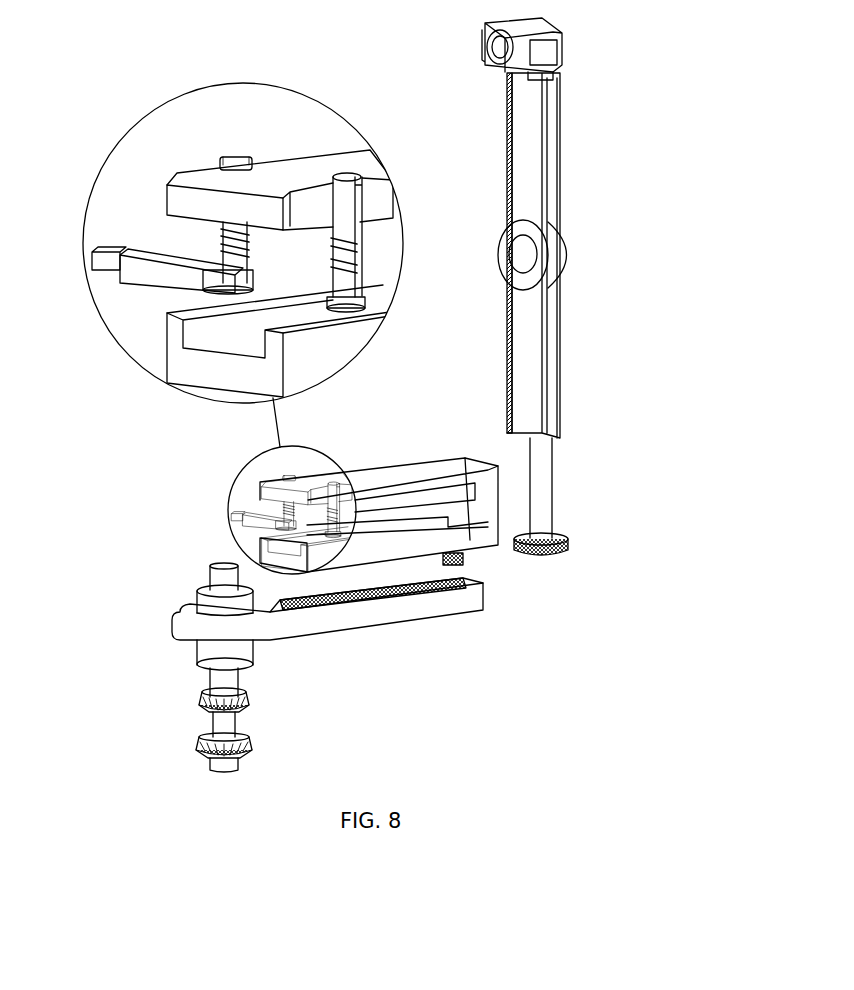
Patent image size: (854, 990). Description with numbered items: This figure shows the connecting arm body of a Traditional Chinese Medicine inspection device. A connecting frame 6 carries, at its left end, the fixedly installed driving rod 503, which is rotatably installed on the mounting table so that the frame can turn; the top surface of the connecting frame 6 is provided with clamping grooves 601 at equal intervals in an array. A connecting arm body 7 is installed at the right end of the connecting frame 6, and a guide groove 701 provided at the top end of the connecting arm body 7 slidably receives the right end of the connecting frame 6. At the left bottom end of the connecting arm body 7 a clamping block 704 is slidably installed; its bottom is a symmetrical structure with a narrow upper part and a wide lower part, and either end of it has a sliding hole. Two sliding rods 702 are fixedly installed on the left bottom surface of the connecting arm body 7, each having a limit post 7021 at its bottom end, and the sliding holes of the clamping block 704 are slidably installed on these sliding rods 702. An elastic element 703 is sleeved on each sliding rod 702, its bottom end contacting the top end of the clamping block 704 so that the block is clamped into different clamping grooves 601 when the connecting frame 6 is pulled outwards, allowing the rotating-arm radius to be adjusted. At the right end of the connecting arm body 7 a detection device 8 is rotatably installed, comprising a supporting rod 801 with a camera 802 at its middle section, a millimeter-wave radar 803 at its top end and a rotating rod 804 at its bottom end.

The detection device 8 is at (596, 286).
The supporting rod 801 is at (558, 163).
The camera 802 is at (577, 257).
The millimeter-wave radar 803 is at (528, 52).
The rotating rod 804 is at (590, 435).
The connecting arm body 7 is at (409, 470).
The guide groove 701 is at (402, 527).
The sliding rod 702 is at (350, 278).
The limit post 7021 is at (365, 303).
The elastic element 703 is at (337, 245).
The clamping block 704 is at (160, 263).
The connecting frame 6 is at (337, 630).
The clamping groove 601 is at (403, 602).
The driving rod 503 is at (213, 723).